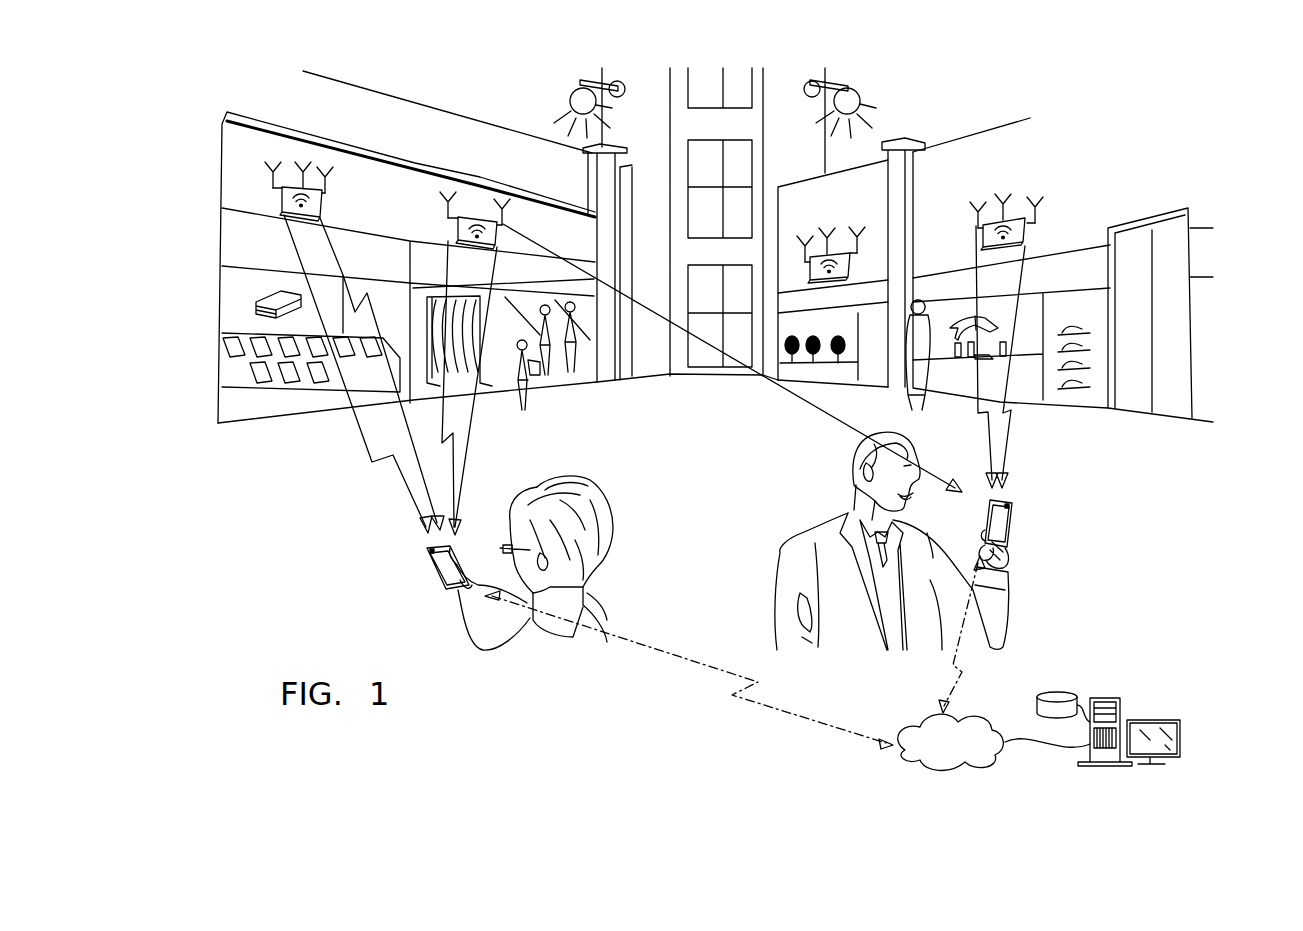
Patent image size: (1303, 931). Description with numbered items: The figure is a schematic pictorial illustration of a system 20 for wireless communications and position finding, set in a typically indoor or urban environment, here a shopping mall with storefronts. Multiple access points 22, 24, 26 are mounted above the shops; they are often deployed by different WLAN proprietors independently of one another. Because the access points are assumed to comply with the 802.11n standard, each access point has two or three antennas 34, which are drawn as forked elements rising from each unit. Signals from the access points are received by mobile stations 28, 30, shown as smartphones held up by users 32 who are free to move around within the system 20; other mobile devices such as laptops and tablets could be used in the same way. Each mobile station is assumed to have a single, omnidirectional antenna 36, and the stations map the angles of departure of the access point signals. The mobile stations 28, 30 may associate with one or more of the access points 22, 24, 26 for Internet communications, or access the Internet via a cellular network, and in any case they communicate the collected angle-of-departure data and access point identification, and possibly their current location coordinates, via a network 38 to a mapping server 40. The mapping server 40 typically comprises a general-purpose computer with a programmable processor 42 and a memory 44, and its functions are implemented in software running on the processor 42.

The system 20 is at (1120, 116).
The access point 22 is at (303, 172).
The access point 24 is at (477, 217).
The access point 26 is at (1025, 232).
The mobile station 28 is at (988, 504).
The mobile station 30 is at (428, 583).
The user 32 is at (598, 618).
The antenna 34 is at (1040, 197).
The antenna 36 is at (427, 551).
The network 38 is at (993, 767).
The mapping server 40 is at (1047, 770).
The programmable processor 42 is at (1121, 704).
The memory 44 is at (1037, 704).